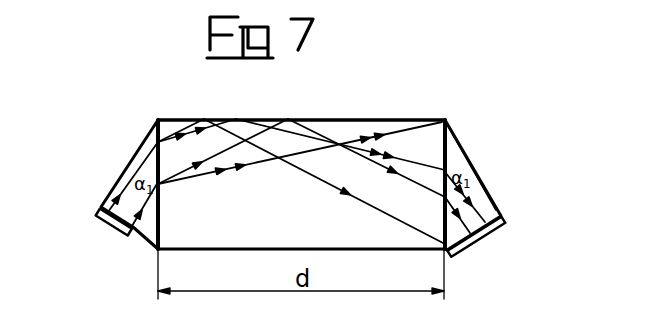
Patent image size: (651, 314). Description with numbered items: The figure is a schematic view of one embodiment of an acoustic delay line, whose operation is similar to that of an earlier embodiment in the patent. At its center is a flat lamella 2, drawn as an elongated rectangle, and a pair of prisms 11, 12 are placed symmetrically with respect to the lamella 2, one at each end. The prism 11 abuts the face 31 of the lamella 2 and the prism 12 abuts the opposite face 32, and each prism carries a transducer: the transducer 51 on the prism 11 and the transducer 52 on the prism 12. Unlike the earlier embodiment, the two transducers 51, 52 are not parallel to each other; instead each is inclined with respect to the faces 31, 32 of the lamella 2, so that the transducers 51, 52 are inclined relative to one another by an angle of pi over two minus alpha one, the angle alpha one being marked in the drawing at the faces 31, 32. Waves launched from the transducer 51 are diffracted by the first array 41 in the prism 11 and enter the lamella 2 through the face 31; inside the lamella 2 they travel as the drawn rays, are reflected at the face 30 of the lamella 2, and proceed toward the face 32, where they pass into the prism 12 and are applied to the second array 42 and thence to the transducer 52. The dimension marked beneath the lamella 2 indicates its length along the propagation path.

The lamella 2 is at (350, 132).
The prism 11 is at (130, 173).
The prism 12 is at (481, 198).
The face of the lamella 30 is at (402, 116).
The face of the lamella 31 is at (161, 130).
The face of the lamella 32 is at (434, 126).
The first array 41 is at (147, 143).
The second array 42 is at (448, 165).
The transducer 51 is at (103, 218).
The transducer 52 is at (482, 236).